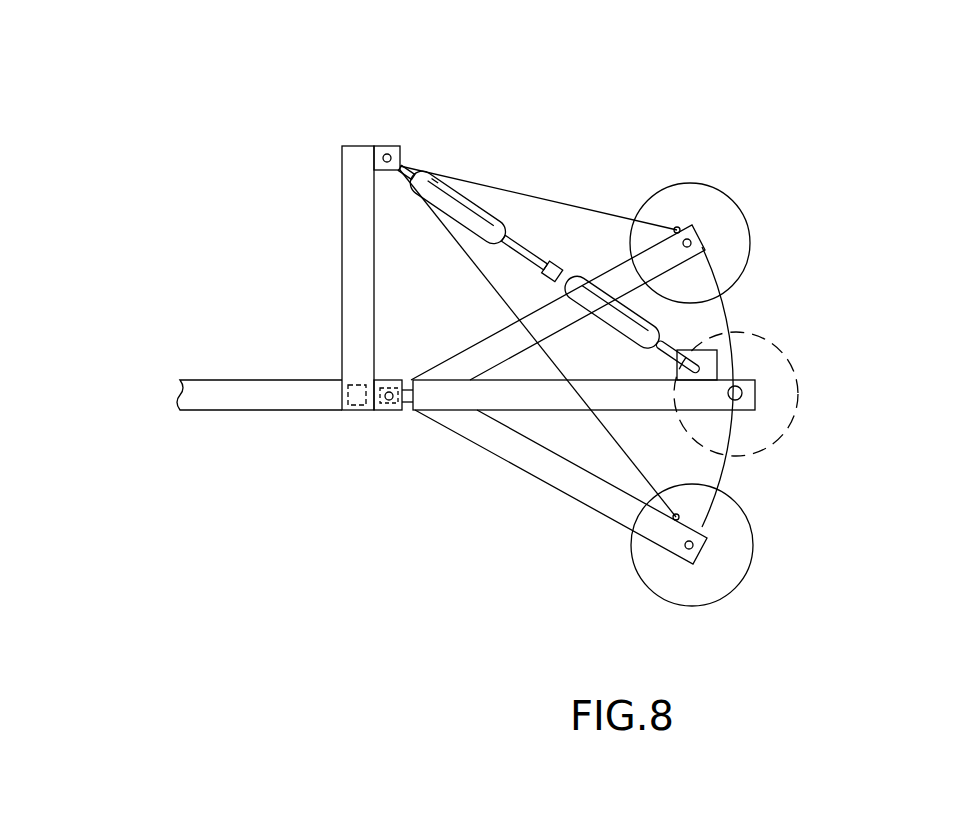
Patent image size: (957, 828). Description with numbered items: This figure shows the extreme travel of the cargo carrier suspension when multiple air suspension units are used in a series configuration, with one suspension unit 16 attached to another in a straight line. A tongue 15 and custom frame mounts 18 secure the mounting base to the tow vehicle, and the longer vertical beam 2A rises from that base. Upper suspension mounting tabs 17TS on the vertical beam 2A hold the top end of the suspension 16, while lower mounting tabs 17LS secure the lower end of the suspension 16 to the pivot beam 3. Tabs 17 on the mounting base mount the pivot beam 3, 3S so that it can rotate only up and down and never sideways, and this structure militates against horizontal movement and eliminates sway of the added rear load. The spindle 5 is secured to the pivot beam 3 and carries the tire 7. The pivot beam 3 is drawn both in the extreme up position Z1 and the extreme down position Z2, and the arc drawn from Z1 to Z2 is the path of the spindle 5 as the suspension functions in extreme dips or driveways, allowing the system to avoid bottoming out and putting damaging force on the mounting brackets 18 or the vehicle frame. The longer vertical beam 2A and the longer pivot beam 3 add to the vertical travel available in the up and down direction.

The structural vertical suspension mounting beam 2A is at (352, 238).
The upper suspension mounting tabs 17TS is at (385, 146).
The custom frame mounts 18 is at (259, 439).
The tongue 15 is at (262, 402).
The tabs 17 is at (402, 412).
The pivot beam 3 is at (755, 408).
The pivot beam 3S is at (500, 345).
The mounting tabs 17LS is at (717, 352).
The suspension 16 is at (598, 300).
The tire 7 is at (737, 347).
The spindle 5 is at (690, 243).
The extreme up position Z1 is at (704, 268).
The extreme down position Z2 is at (705, 526).